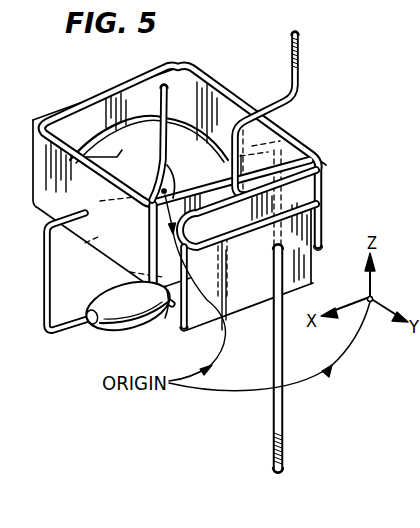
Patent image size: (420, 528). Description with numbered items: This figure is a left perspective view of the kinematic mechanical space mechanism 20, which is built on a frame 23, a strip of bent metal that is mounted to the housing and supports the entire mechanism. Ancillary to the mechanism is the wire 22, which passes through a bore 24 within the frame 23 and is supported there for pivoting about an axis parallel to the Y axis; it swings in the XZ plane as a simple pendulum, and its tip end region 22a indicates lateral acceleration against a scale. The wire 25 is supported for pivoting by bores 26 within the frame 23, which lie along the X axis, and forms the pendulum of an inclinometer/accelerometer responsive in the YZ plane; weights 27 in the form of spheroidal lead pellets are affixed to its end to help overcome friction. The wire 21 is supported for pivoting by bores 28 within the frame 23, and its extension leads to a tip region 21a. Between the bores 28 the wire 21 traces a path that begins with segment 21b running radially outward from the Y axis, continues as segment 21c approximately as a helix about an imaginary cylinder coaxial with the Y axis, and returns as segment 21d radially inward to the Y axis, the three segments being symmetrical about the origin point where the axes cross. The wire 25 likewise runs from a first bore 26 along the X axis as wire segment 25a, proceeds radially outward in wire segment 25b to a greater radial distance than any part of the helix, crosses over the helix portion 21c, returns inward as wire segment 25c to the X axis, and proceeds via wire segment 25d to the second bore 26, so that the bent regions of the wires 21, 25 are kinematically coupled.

The kinematic mechanical space mechanism 20 is at (333, 172).
The wire 21 is at (281, 103).
The tip region 21a is at (298, 53).
The segment 21b is at (77, 101).
The segment 21c is at (214, 127).
The segment 21d is at (237, 126).
The wire 22 is at (303, 367).
The tip end region 22a is at (284, 448).
The frame 23 is at (322, 196).
The bore 24 is at (308, 257).
The wire 25 is at (133, 190).
The wire segment 25a is at (103, 260).
The wire segment 25b is at (148, 105).
The wire segment 25c is at (176, 140).
The wire segment 25d is at (213, 157).
The bores 26 is at (284, 126).
The weights 27 is at (128, 309).
The bores 28 is at (72, 157).